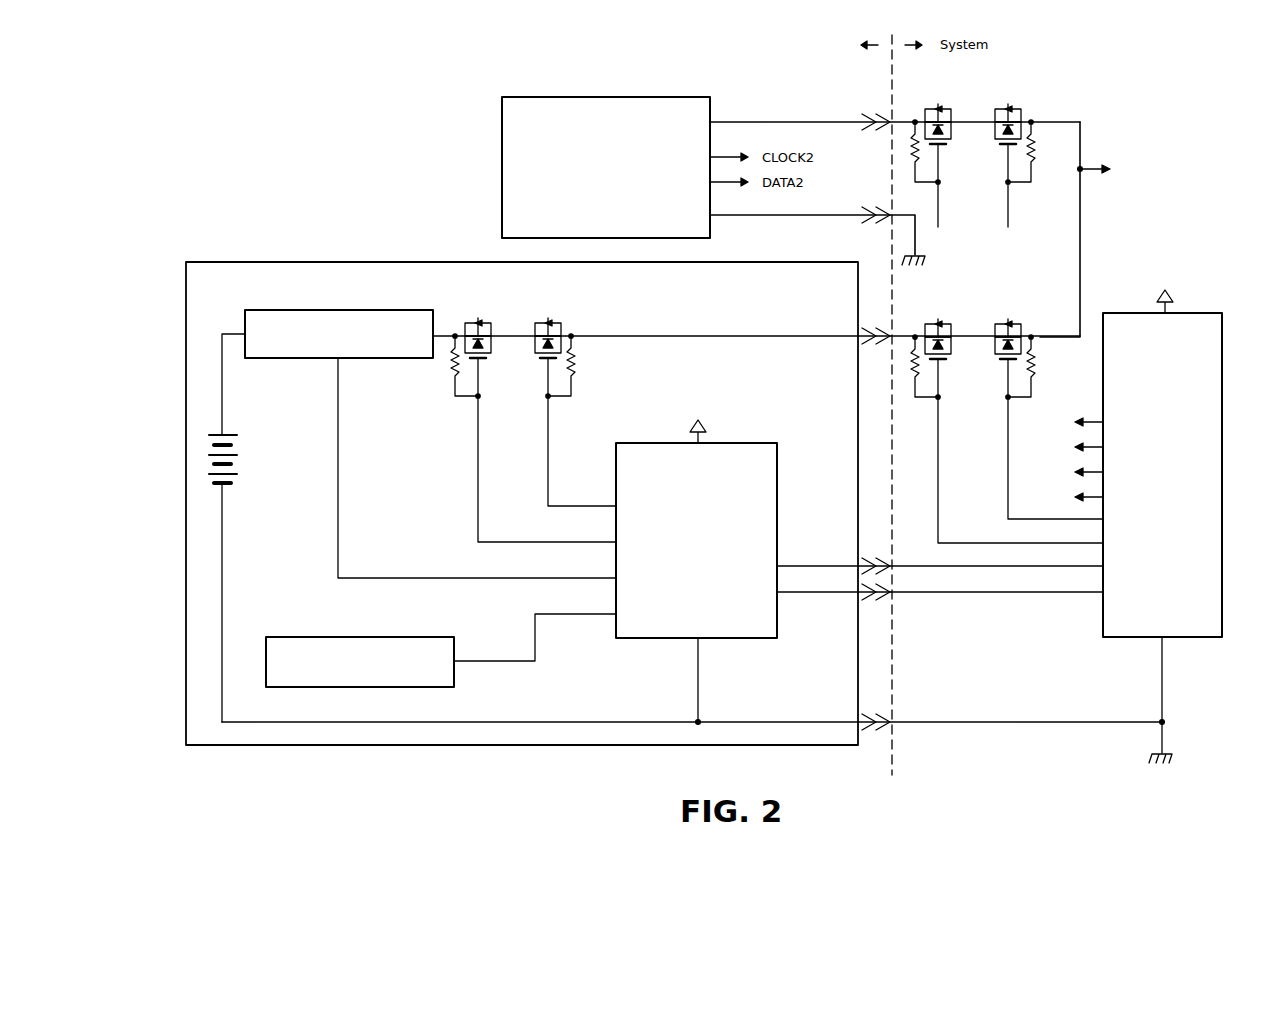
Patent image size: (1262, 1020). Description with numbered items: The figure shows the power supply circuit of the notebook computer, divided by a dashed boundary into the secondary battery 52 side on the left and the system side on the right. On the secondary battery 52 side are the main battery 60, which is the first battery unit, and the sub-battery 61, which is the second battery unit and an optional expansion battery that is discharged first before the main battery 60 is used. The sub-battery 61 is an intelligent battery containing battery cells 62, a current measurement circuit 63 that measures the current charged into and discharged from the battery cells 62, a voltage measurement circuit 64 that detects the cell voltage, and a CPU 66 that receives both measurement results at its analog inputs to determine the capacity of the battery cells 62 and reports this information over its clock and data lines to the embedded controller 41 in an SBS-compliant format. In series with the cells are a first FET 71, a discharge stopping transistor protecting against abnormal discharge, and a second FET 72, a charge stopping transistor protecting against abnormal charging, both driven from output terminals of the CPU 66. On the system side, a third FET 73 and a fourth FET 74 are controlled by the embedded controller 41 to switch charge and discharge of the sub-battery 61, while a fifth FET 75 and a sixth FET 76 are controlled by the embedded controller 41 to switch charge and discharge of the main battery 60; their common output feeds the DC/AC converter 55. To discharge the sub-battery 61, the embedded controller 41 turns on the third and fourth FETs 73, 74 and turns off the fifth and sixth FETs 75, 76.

The embedded controller 41 is at (1190, 313).
The secondary battery 52 is at (791, 44).
The DC/AC converter 55 is at (1142, 167).
The main battery 60 is at (502, 168).
The sub-battery 61 is at (342, 262).
The battery cells 62 is at (240, 486).
The current measurement circuit 63 is at (384, 310).
The voltage measurement circuit 64 is at (406, 637).
The CPU 66 is at (777, 495).
The first FET 71 is at (496, 374).
The second FET 72 is at (578, 320).
The third FET 73 is at (956, 372).
The fourth FET 74 is at (1050, 364).
The fifth FET 75 is at (956, 150).
The sixth FET 76 is at (1036, 110).